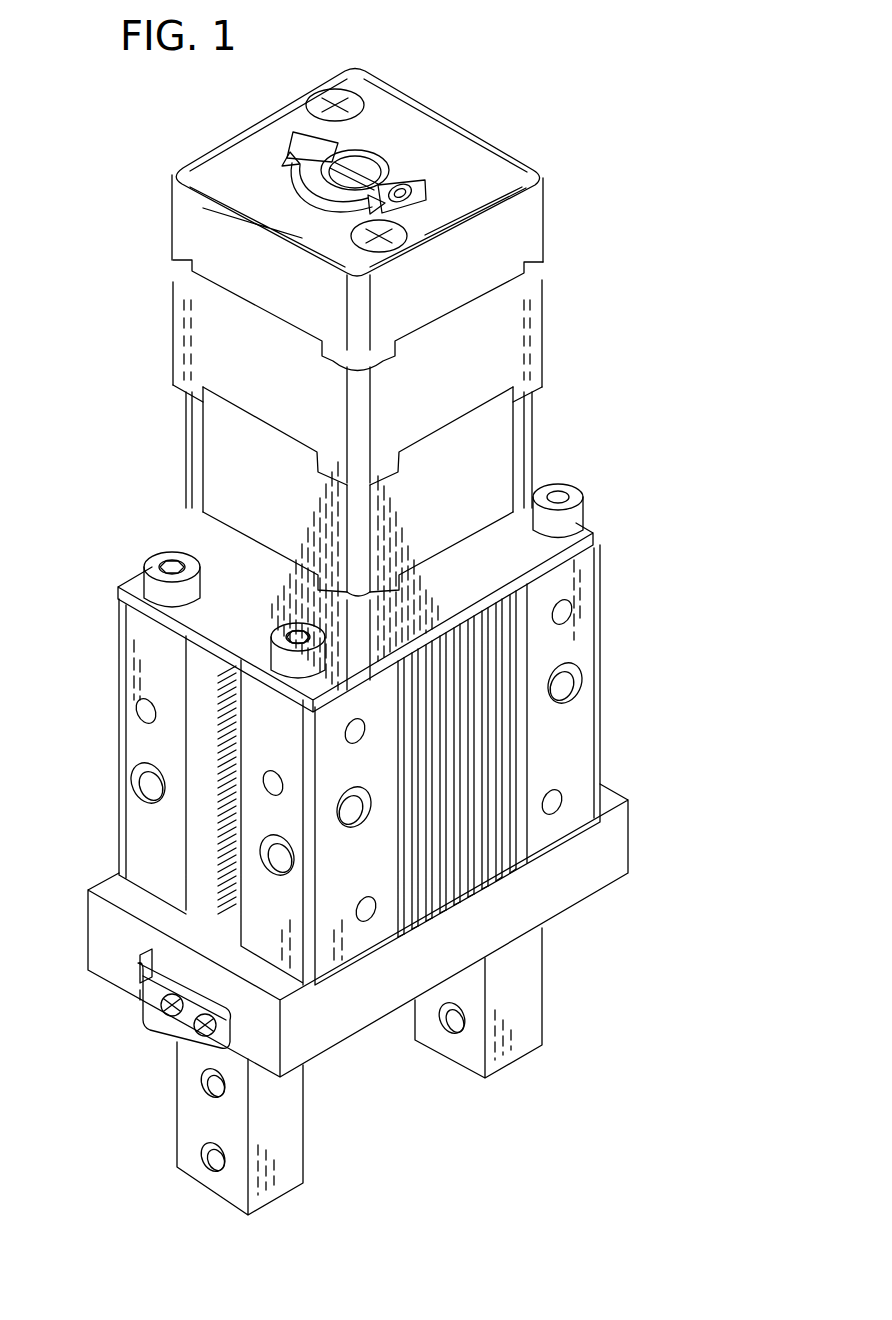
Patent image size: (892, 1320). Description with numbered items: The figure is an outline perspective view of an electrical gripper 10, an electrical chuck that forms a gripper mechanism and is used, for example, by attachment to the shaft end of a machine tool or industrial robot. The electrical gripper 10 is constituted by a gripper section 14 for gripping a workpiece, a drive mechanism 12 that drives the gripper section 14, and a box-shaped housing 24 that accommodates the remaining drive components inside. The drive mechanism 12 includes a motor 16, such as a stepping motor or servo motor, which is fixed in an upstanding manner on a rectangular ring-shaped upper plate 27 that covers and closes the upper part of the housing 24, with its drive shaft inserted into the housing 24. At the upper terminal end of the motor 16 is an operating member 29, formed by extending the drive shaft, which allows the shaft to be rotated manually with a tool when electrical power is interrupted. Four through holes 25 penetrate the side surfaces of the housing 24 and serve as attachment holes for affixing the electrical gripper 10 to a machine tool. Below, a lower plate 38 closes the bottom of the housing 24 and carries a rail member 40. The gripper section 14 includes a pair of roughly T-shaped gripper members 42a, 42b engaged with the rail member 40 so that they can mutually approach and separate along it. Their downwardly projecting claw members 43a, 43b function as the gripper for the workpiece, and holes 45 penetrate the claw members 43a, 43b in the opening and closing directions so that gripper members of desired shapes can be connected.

The electrical gripper 10 is at (643, 95).
The drive mechanism 12 is at (572, 759).
The gripper section 14 is at (414, 1133).
The motor 16 is at (571, 217).
The housing 24 is at (562, 733).
The through holes 25 is at (562, 684).
The upper plate 27 is at (586, 516).
The operating member 29 is at (370, 162).
The lower plate 38 is at (107, 937).
The rail member 40 is at (147, 1005).
The gripper member 42a is at (197, 1093).
The gripper member 42b is at (528, 950).
The claw member 43a is at (222, 1190).
The claw member 43b is at (468, 1052).
The holes 45 is at (212, 1168).